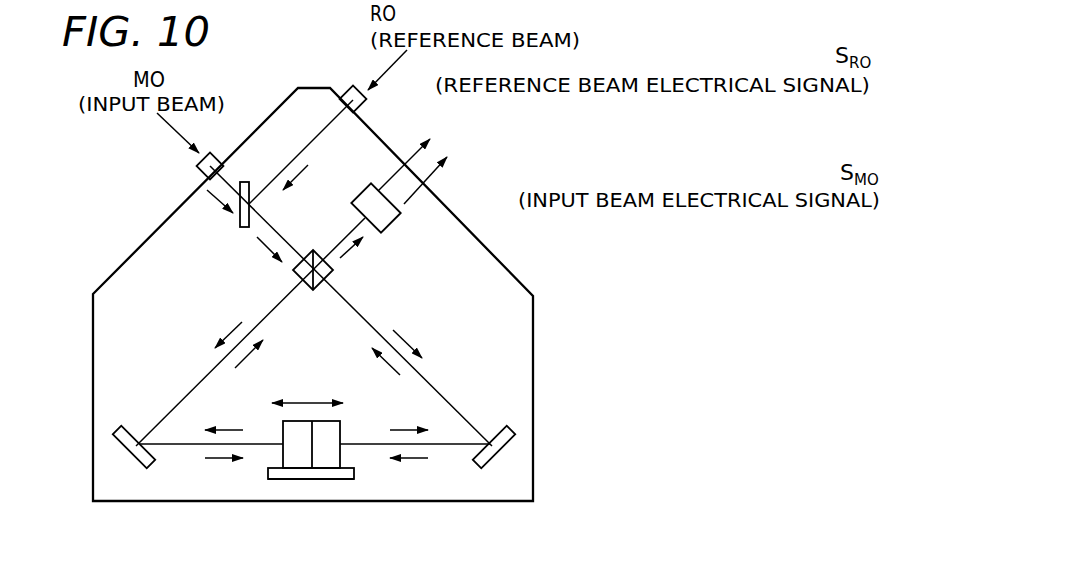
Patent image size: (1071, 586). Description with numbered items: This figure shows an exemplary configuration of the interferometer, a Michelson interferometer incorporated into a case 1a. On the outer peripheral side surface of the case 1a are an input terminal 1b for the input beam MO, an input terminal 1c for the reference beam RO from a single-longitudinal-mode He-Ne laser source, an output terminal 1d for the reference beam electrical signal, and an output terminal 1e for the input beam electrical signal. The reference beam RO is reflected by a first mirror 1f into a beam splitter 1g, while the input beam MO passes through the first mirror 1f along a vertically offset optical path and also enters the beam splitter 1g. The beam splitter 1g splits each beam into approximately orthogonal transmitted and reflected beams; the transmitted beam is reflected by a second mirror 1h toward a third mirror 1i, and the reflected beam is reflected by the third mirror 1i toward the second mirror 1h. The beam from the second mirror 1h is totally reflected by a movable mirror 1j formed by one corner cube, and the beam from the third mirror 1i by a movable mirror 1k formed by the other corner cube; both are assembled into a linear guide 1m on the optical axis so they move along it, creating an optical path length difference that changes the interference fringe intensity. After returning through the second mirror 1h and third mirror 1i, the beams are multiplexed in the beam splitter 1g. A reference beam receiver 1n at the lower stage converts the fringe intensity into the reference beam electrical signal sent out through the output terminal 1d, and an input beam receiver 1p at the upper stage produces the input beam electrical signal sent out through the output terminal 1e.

The case 1a is at (93, 321).
The input terminal 1b is at (198, 167).
The input terminal 1c is at (346, 95).
The output terminal 1d is at (418, 152).
The output terminal 1e is at (402, 206).
The first mirror 1f is at (245, 226).
The beam splitter 1g is at (323, 273).
The second mirror 1h is at (494, 448).
The third mirror 1i is at (133, 448).
The movable mirror 1j is at (335, 452).
The movable mirror 1k is at (288, 452).
The linear guide 1m is at (309, 474).
The reference beam receiver 1n is at (488, 235).
The input beam receiver 1p is at (386, 222).